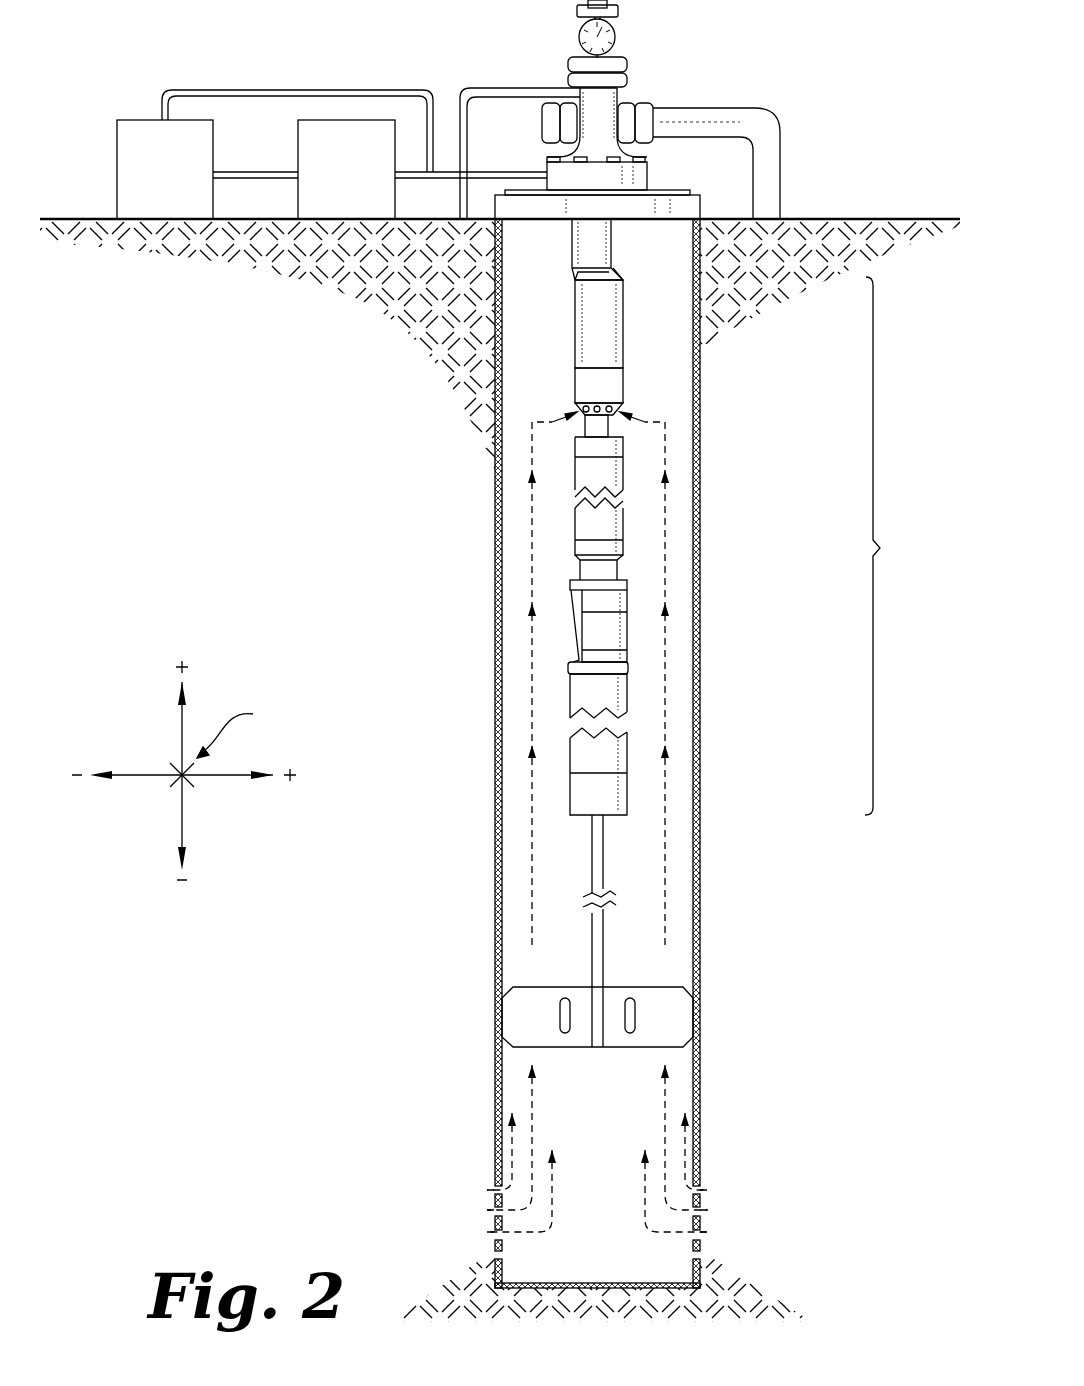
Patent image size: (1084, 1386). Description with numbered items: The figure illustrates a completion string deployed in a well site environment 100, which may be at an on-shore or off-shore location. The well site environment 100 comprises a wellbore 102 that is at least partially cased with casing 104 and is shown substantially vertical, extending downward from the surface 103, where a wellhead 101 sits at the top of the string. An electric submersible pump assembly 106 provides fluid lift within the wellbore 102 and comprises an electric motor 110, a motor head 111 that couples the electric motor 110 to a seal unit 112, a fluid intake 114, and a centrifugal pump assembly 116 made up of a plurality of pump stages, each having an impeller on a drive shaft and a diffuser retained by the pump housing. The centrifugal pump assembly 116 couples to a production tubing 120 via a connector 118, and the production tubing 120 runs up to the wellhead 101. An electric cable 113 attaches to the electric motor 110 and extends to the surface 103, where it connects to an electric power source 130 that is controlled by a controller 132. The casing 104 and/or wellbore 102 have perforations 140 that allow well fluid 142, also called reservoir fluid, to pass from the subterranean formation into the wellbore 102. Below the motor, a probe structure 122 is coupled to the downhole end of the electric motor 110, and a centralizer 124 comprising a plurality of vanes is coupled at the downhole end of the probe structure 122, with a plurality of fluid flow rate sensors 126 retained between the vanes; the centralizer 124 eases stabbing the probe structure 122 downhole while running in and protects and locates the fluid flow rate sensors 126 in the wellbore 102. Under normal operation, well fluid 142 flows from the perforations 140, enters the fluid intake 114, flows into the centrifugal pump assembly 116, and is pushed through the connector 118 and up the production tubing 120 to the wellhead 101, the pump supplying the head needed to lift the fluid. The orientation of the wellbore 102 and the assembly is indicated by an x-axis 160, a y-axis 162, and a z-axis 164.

The well site environment 100 is at (905, 107).
The wellhead 101 is at (617, 41).
The wellbore 102 is at (545, 389).
The surface 103 is at (73, 217).
The casing 104 is at (495, 537).
The electric submersible pump (ESP) assembly 106 is at (893, 546).
The electric motor 110 is at (600, 703).
The motor head 111 is at (603, 627).
The seal unit 112 is at (602, 527).
The electric cable 113 is at (573, 627).
The fluid intake 114 is at (600, 387).
The centrifugal pump assembly 116 is at (593, 335).
The connector 118 is at (622, 269).
The production tubing 120 is at (597, 237).
The probe structure 122 is at (605, 945).
The centralizer 124 is at (667, 1014).
The fluid flow rate sensors 126 is at (560, 1010).
The electric power source 130 is at (365, 186).
The controller 132 is at (183, 186).
The perforations 140 is at (698, 1199).
The well fluid 142 is at (647, 1193).
The x-axis 160 is at (276, 706).
The y-axis 162 is at (183, 630).
The z-axis 164 is at (289, 815).